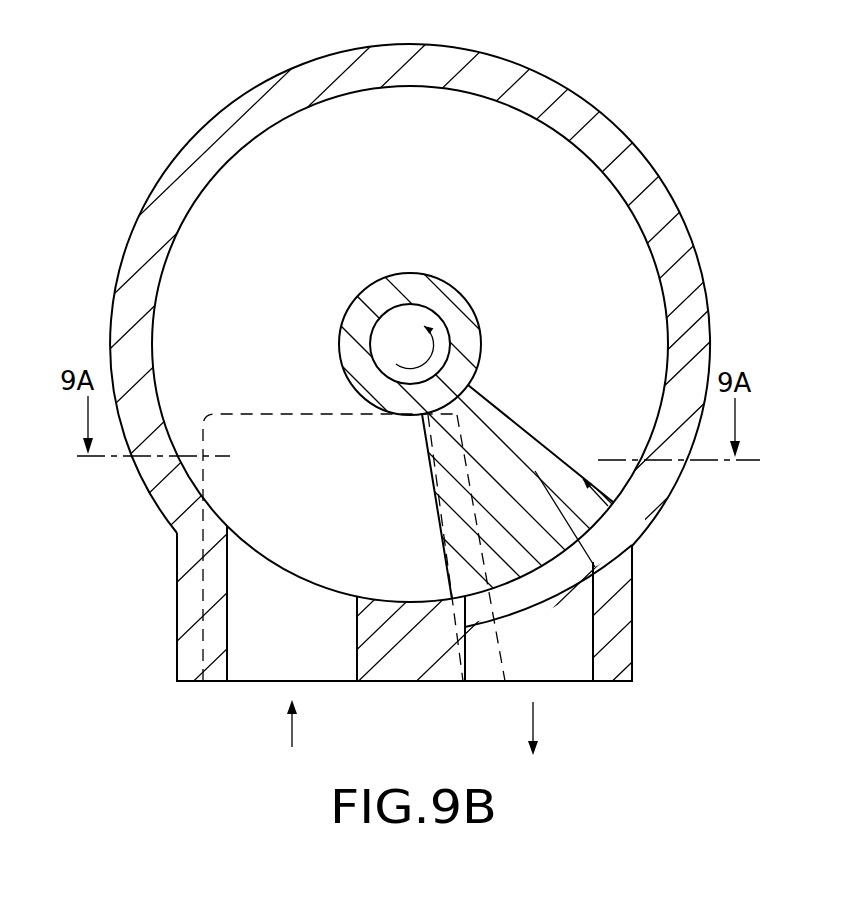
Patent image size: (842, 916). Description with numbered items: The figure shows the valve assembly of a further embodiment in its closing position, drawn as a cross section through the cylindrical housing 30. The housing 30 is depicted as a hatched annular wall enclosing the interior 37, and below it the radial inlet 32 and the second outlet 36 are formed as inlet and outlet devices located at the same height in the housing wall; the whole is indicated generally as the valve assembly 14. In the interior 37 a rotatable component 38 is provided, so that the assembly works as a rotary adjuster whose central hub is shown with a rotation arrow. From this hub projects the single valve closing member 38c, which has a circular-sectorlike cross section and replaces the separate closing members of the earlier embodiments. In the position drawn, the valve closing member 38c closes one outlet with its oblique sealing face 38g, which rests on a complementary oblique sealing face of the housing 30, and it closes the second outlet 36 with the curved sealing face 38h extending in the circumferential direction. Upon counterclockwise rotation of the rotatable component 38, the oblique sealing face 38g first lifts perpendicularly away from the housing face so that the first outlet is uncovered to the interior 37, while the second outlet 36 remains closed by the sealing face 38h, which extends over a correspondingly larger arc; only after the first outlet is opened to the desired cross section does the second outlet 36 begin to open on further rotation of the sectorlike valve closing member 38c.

The valve body 14 is at (672, 532).
The cylindrical housing 30 is at (683, 291).
The inlet 32 is at (357, 662).
The second outlet 36 is at (593, 660).
The interior 37 is at (617, 222).
The rotatable component 38 is at (450, 283).
The valve closing member 38c is at (520, 427).
The oblique sealing face 38g is at (455, 551).
The circumferentially extending sealing face 38h is at (553, 557).